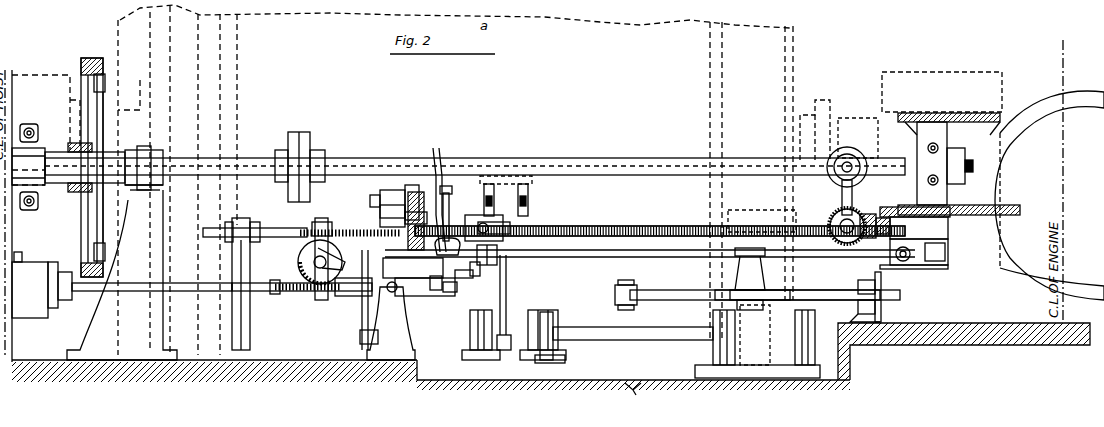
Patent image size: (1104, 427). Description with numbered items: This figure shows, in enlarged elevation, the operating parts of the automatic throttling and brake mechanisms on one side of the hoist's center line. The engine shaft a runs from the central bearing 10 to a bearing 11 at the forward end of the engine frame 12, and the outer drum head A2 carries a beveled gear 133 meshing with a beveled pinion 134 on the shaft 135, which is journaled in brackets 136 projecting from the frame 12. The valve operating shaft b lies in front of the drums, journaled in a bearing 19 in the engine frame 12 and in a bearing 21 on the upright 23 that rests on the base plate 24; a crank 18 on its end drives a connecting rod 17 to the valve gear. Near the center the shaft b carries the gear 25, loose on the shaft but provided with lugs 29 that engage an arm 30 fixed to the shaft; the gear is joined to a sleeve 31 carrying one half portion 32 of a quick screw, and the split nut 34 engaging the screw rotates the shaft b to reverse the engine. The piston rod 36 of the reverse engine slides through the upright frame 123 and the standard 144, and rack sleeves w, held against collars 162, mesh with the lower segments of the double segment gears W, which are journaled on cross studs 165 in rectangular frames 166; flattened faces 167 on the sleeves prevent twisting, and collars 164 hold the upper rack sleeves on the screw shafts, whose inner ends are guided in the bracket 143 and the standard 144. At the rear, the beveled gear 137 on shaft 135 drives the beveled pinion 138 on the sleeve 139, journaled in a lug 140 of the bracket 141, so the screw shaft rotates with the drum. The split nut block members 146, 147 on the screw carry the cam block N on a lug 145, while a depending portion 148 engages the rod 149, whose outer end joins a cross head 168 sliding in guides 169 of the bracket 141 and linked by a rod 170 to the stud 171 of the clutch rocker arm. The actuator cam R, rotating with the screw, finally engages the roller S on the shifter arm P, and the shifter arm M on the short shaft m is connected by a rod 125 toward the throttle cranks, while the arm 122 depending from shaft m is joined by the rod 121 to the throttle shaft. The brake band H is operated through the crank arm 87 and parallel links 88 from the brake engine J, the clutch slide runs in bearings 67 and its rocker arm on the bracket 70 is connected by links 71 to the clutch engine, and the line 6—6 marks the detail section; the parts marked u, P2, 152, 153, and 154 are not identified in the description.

The central bearing 10 is at (33, 74).
The one-half portion of quick threaded screw 32 is at (29, 128).
The split nut 34 is at (27, 208).
The sleeve 31 is at (54, 156).
The gear 25 is at (88, 60).
The stops or lugs 29 is at (106, 84).
The arm 30 is at (100, 102).
The bearing 21 is at (157, 152).
The upright 23 is at (122, 275).
The piston rod 36 is at (175, 288).
The outer head of drum A2 is at (225, 78).
The bracket 143 is at (242, 228).
The upright or standard 144 is at (245, 270).
The collars 164 is at (306, 229).
The flattened faces 167 is at (320, 224).
The rectangular frames 166 is at (330, 224).
The rack u is at (602, 224).
The double segment gears W is at (308, 258).
The rack sleeves w is at (305, 292).
The collars 162 is at (280, 296).
The base plate 24 is at (268, 358).
The arm 122 is at (362, 311).
The rod 121 is at (378, 338).
The upright frame 123 is at (401, 318).
The clutch member 152 is at (420, 264).
The pin 153 is at (432, 286).
The cross studs 165 is at (452, 287).
The link 154 is at (464, 278).
The short shaft m is at (463, 264).
The shifter arm P is at (395, 203).
The pawl lever P2 is at (412, 200).
The roller S is at (422, 206).
The shifter arm M is at (434, 200).
The links or rods 125 is at (447, 195).
The actuator cam R is at (447, 231).
The section line 6 is at (475, 198).
The member of split nut block 147 is at (482, 220).
The member of split nut block 146 is at (505, 222).
The lug 145 is at (525, 231).
The parallel links 88 is at (508, 202).
The cam block or member N is at (500, 247).
The depending portion 148 is at (507, 262).
The crank arm 87 is at (507, 286).
The rod 149 is at (604, 256).
The valve operating shaft b is at (596, 160).
The links 71 is at (618, 300).
The brake engine J is at (604, 335).
The upright or stud 171 is at (738, 260).
The rod 170 is at (775, 256).
The bracket 70 is at (745, 365).
The bearings 67 is at (882, 283).
The beveled gear 133 is at (818, 102).
The beveled pinion 134 is at (822, 158).
The shaft 135 is at (830, 184).
The brake band H is at (762, 212).
The engine shaft a is at (851, 128).
The brackets 136 is at (860, 158).
The sleeve 139 is at (885, 197).
The lug 140 is at (898, 210).
The beveled gear 137 is at (834, 236).
The beveled pinion 138 is at (866, 242).
The bracket 141 is at (950, 240).
The guides 169 is at (948, 259).
The cross heads 168 is at (932, 266).
The bearings 11 is at (942, 76).
The bearings 19 is at (948, 130).
The connecting rods 17 is at (968, 158).
The cranks 18 is at (963, 170).
The engine frames 12 is at (1040, 104).